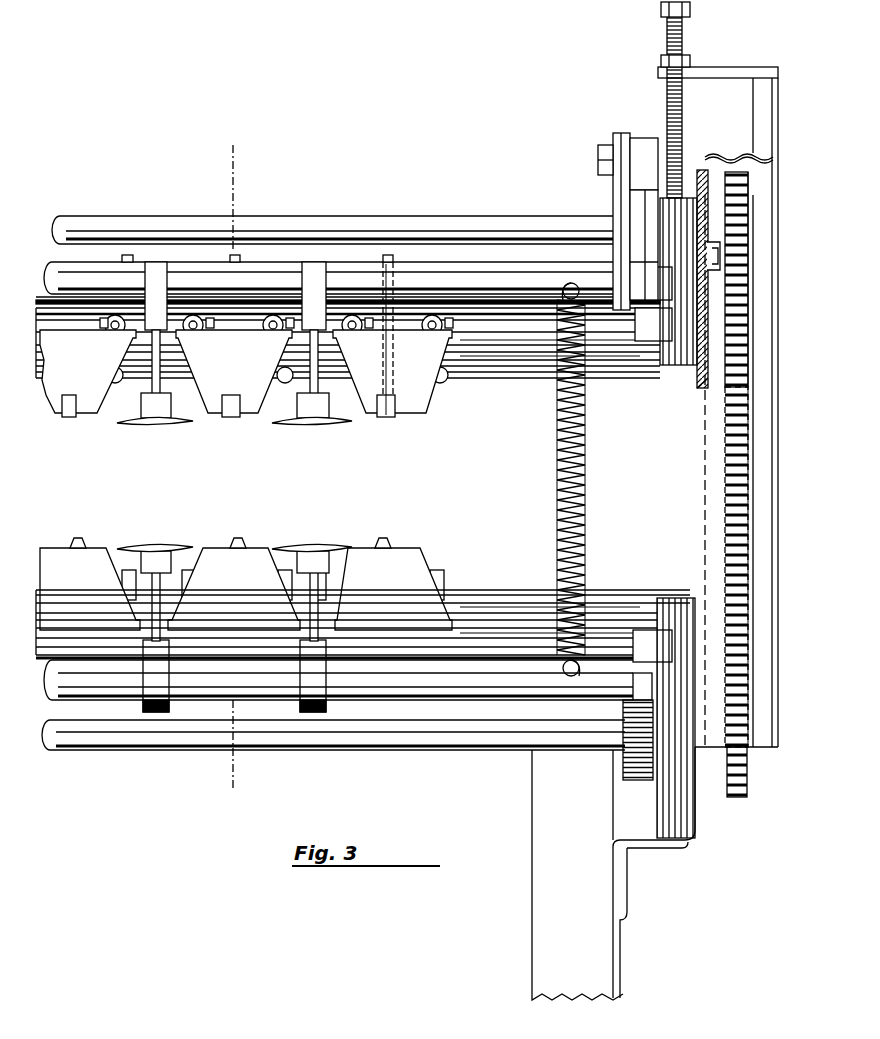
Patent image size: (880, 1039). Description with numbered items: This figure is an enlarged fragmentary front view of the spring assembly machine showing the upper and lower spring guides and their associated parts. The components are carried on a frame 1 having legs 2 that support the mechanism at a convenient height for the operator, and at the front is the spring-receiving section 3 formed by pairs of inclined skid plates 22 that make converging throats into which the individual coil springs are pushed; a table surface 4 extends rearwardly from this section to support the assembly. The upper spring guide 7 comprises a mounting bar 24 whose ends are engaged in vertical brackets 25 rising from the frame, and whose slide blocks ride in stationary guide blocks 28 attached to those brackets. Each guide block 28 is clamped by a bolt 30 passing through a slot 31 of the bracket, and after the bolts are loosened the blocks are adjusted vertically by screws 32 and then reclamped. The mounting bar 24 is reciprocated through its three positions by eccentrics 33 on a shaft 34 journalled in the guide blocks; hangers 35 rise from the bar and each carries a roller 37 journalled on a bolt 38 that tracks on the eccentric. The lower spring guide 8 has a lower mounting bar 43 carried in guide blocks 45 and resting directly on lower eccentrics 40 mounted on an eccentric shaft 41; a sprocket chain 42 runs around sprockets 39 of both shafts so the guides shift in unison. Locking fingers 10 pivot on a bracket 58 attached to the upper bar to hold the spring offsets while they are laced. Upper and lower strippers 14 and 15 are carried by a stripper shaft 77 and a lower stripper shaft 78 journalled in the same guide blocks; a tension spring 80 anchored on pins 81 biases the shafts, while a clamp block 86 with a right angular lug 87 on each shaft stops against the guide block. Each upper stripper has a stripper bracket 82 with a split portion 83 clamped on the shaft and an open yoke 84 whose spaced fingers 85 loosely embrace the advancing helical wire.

The frame 1 is at (691, 853).
The legs 2 is at (540, 935).
The spring-receiving section 3 is at (417, 477).
The table surface 4 is at (256, 160).
The upper spring guide 7 is at (482, 330).
The lower spring guide 8 is at (476, 623).
The locking fingers 10 is at (388, 266).
The upper strippers 14 is at (148, 426).
The lower strippers 15 is at (305, 545).
The inclined skid plates 22 is at (65, 392).
The mounting bar 24 is at (531, 352).
The vertical brackets 25 is at (700, 379).
The guide blocks 28 is at (684, 236).
The bolt 30 is at (712, 273).
The slot 31 is at (716, 290).
The screws 32 is at (689, 31).
The eccentrics 33 is at (640, 206).
The shaft 34 is at (440, 228).
The hangers or roller brackets 35 is at (620, 140).
The roller 37 is at (645, 150).
The bolt 38 is at (598, 158).
The sprockets 39 is at (715, 210).
The eccentrics 40 is at (636, 790).
The eccentric shaft 41 is at (141, 742).
The sprocket chain 42 is at (745, 380).
The lower mounting bar 43 is at (520, 612).
The guide blocks 45 is at (680, 827).
The bracket 58 is at (383, 312).
The stripper shaft 77 is at (206, 272).
The lower stripper shaft 78 is at (372, 682).
The tension spring 80 is at (586, 483).
The pins 81 is at (568, 285).
The stripper bracket 82 is at (150, 352).
The split portion 83 is at (310, 288).
The open yoke 84 is at (332, 412).
The fingers 85 is at (178, 425).
The clamp block 86 is at (638, 283).
The right angular lug 87 is at (646, 342).